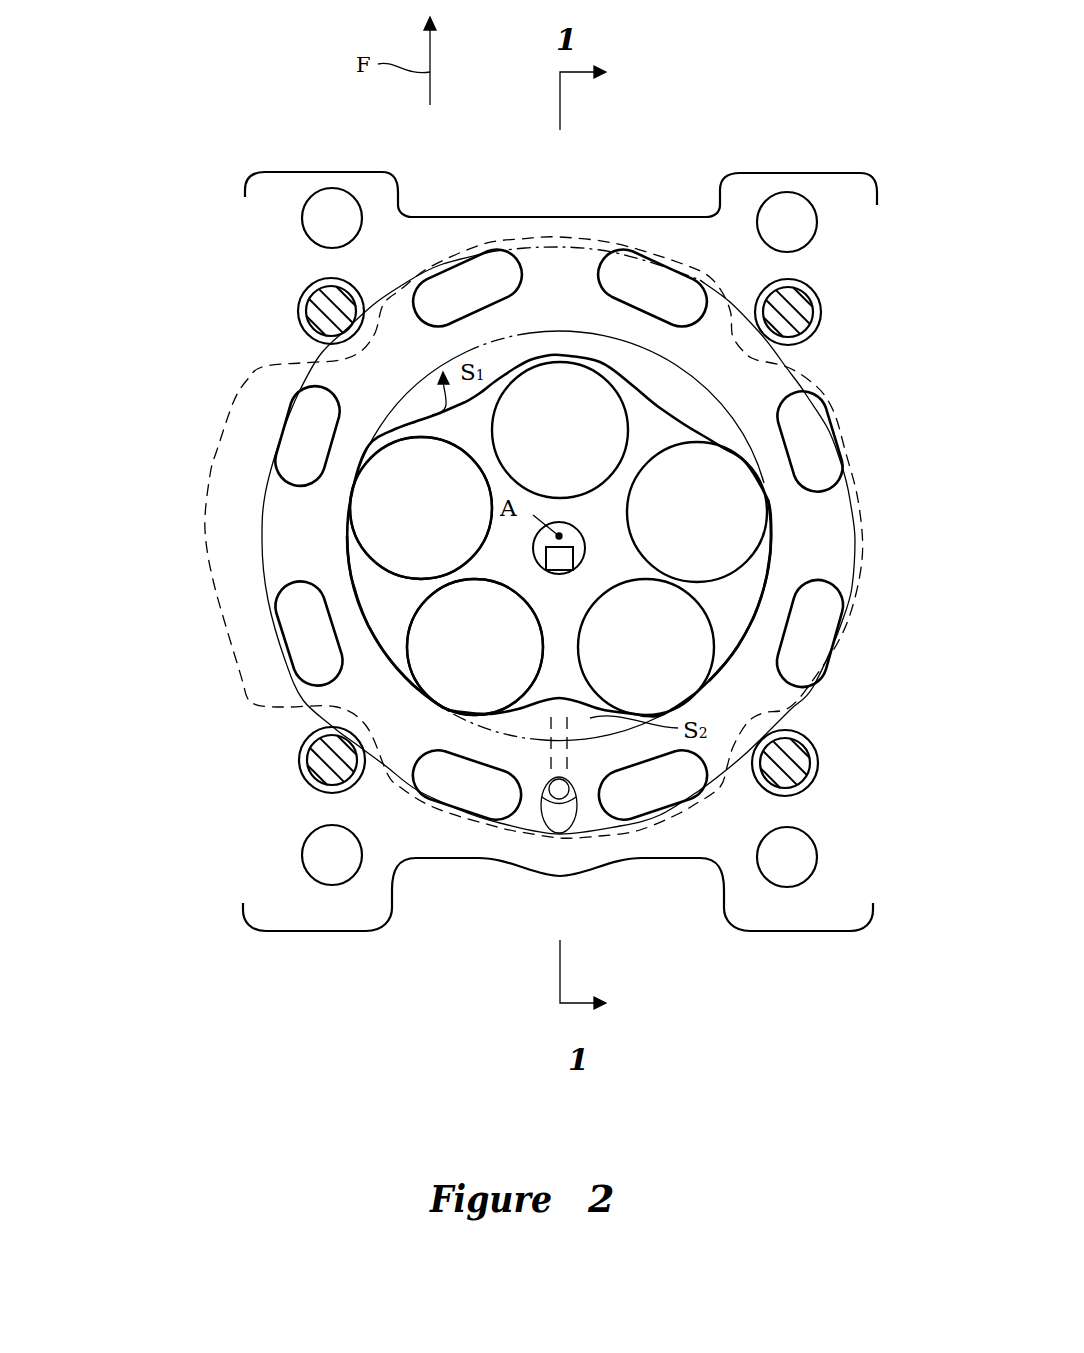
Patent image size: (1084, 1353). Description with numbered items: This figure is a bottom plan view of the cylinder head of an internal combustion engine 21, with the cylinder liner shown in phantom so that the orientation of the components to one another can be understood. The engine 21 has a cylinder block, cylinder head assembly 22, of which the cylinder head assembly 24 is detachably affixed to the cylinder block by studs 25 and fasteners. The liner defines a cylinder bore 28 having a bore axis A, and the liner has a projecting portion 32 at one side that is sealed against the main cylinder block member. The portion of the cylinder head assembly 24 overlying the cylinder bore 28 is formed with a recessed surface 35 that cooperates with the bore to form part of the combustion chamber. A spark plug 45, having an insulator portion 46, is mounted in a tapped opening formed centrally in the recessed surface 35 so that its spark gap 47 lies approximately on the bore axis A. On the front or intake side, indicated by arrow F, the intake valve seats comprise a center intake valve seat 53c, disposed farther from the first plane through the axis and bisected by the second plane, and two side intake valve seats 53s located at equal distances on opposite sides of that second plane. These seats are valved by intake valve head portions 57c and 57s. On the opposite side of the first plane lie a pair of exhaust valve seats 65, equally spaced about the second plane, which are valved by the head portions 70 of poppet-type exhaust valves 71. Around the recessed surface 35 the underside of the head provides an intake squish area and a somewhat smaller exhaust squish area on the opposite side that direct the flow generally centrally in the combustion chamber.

The internal combustion engine 21 is at (278, 990).
The cylinder block, cylinder head assembly 22 is at (376, 956).
The cylinder head assembly 24 is at (466, 866).
The studs 25 is at (302, 296).
The cylinder bore 28 is at (440, 413).
The projecting portion 32 is at (243, 700).
The recessed surface 35 is at (372, 578).
The spark plug 45 is at (591, 575).
The insulator portion 46 is at (582, 527).
The spark gap 47 is at (580, 552).
The center intake valve seat 53c is at (622, 456).
The side intake valve seats 53s is at (636, 482).
The head portion of center intake valve 57c is at (592, 394).
The head portions of side intake valves 57s is at (740, 483).
The exhaust valve seats 65 is at (541, 665).
The head portions of exhaust valves 70 is at (416, 497).
The poppet-type exhaust valves 71 is at (427, 660).